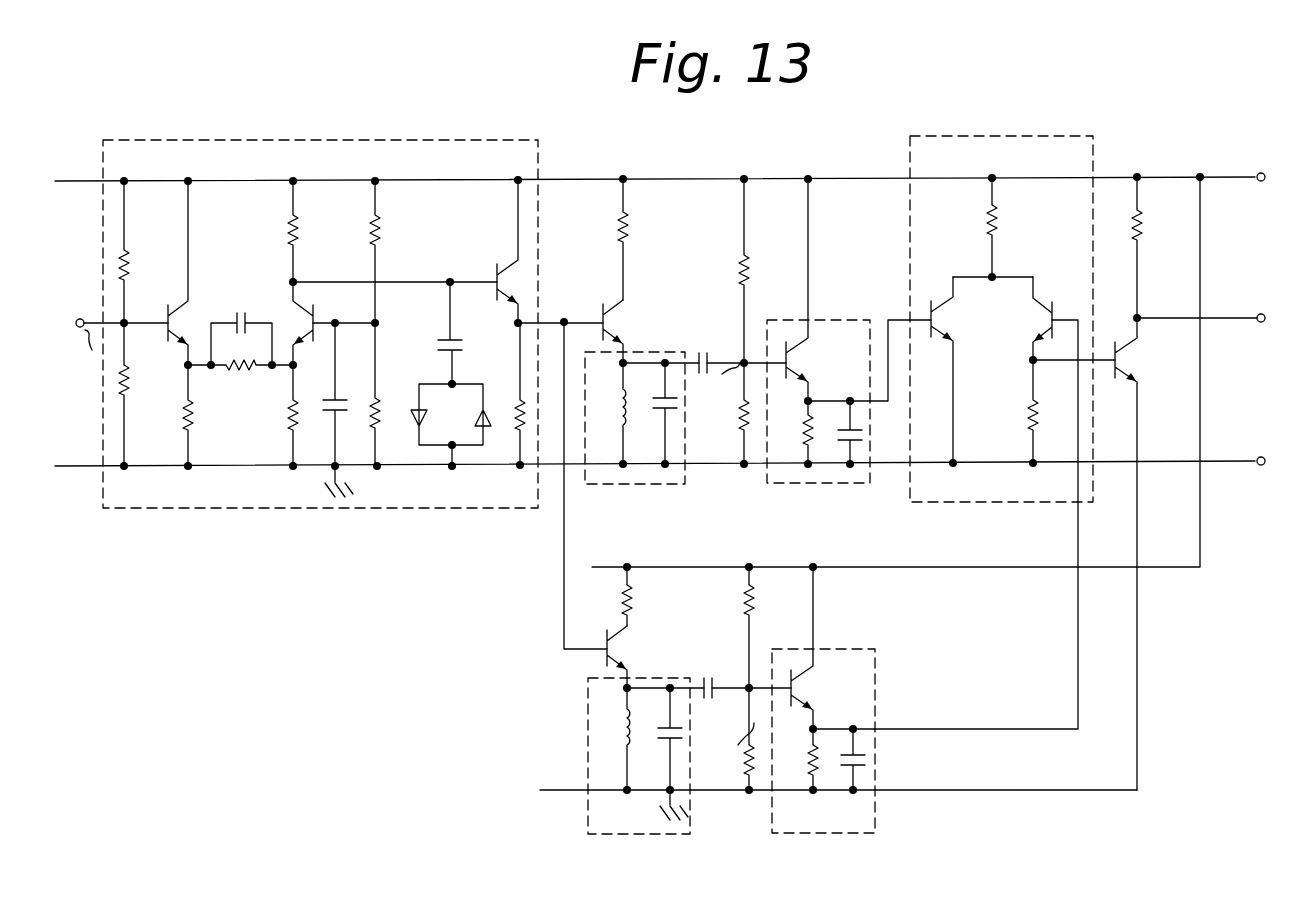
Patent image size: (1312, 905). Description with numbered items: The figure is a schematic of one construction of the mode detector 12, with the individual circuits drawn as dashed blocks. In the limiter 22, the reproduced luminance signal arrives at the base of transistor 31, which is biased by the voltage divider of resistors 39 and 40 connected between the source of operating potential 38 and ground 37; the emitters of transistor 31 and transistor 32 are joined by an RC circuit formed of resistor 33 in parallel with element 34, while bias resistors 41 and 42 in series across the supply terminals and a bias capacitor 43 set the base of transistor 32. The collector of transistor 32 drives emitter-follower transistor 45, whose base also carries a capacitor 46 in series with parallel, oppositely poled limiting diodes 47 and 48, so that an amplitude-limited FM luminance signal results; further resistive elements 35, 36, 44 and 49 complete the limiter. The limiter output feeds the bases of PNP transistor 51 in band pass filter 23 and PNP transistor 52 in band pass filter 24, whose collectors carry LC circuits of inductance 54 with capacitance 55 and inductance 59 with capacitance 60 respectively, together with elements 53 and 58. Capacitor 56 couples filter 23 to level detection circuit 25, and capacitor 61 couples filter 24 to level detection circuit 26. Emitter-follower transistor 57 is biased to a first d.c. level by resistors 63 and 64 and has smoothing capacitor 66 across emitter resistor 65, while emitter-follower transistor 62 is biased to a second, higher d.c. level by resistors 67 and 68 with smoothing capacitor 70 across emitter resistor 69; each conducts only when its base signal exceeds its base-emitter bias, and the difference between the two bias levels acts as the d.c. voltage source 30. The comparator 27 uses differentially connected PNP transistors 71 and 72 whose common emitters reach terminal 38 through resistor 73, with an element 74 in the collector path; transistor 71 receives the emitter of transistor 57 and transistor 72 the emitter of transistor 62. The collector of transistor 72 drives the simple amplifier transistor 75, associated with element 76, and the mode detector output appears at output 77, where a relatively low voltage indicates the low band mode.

The mode detector 12 is at (1150, 118).
The limiter 22 is at (398, 90).
The band pass filter 23 is at (649, 350).
The band pass filter 24 is at (582, 703).
The level detection circuit 25 is at (850, 320).
The level detection circuit 26 is at (852, 649).
The comparator 27 is at (1100, 104).
The d.c. voltage source 30 is at (76, 321).
The transistor 31 is at (166, 312).
The transistor 32 is at (316, 323).
The resistor 33 is at (240, 366).
The resistor 34 is at (238, 312).
The resistor 35 is at (194, 424).
The resistor 36 is at (290, 418).
The ground 37 is at (1257, 456).
The source of operating potential 38 is at (1257, 173).
The resistor 39 is at (129, 254).
The resistor 40 is at (128, 388).
The bias resistor 41 is at (383, 221).
The bias resistor 42 is at (380, 399).
The bias capacitor 43 is at (344, 410).
The resistor 44 is at (299, 228).
The emitter-follower transistor 45 is at (494, 271).
The capacitor 46 is at (456, 351).
The limiting diode 47 is at (429, 424).
The limiting diode 48 is at (483, 404).
The resistor 49 is at (516, 416).
The PNP transistor 51 is at (600, 310).
The PNP transistor 52 is at (622, 636).
The resistor 53 is at (627, 222).
The inductance 54 is at (618, 413).
The capacitance 55 is at (656, 405).
The capacitor 56 is at (703, 352).
The emitter-follower transistor 57 is at (800, 362).
The resistor 58 is at (632, 598).
The inductance 59 is at (622, 740).
The capacitance 60 is at (660, 736).
The capacitor 61 is at (708, 678).
The emitter-follower transistor 62 is at (805, 690).
The resistor 63 is at (742, 272).
The resistor 64 is at (742, 418).
The emitter resistor 65 is at (804, 442).
The smoothing capacitor 66 is at (849, 439).
The resistor 67 is at (749, 599).
The resistor 68 is at (748, 748).
The emitter resistor 69 is at (807, 754).
The smoothing capacitor 70 is at (867, 762).
The PNP transistor 71 is at (940, 333).
The PNP transistor 72 is at (1056, 300).
The resistor 73 is at (985, 226).
The resistor 74 is at (1029, 412).
The transistor 75 is at (1125, 368).
The resistor 76 is at (1145, 222).
The output 77 is at (1259, 314).